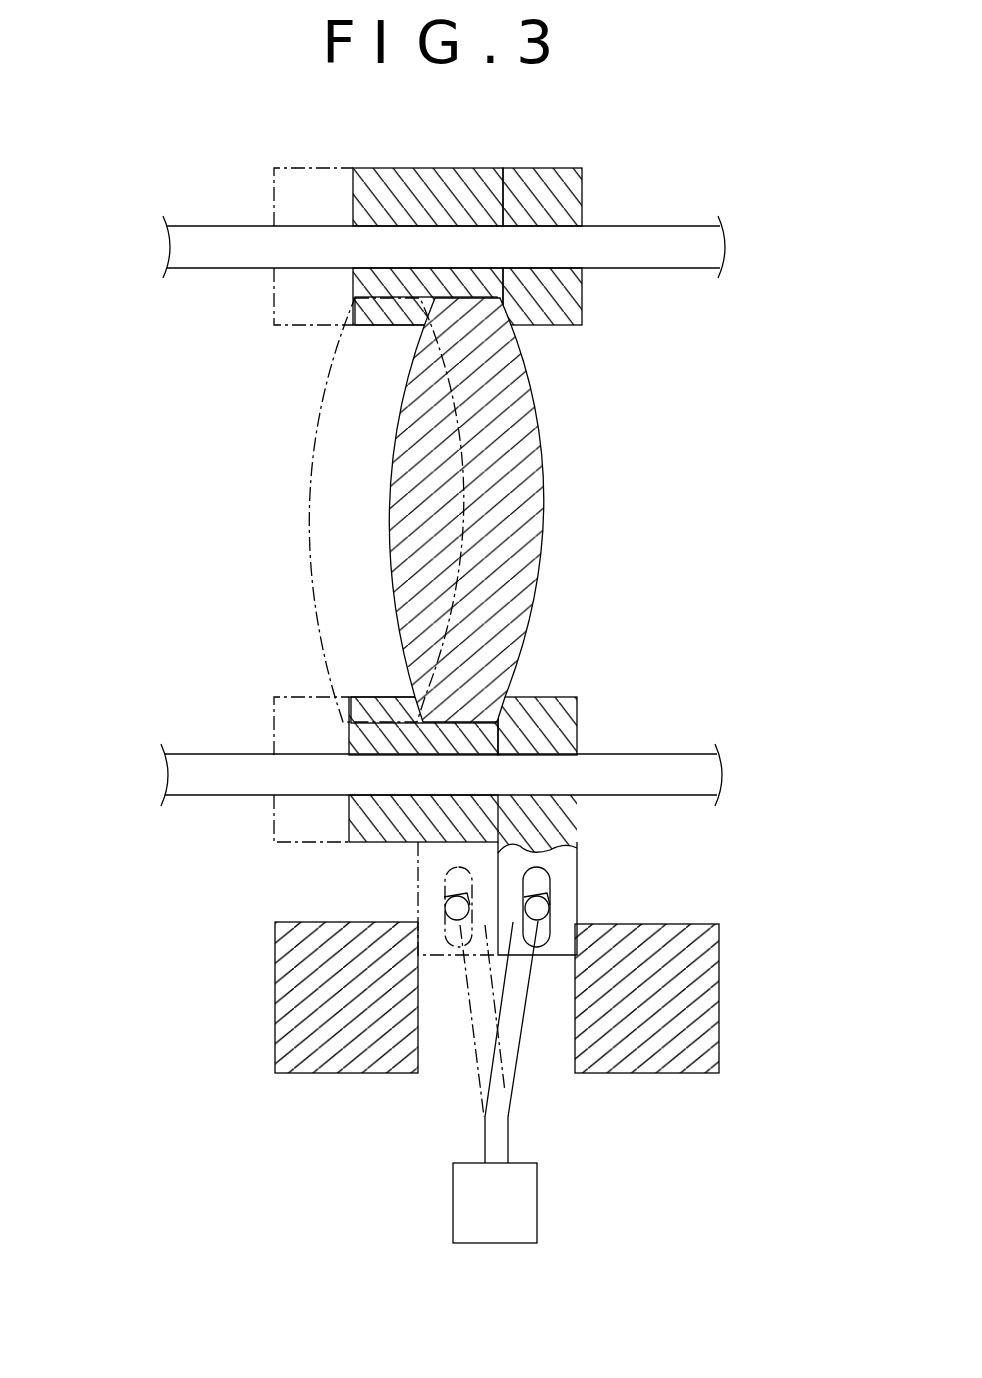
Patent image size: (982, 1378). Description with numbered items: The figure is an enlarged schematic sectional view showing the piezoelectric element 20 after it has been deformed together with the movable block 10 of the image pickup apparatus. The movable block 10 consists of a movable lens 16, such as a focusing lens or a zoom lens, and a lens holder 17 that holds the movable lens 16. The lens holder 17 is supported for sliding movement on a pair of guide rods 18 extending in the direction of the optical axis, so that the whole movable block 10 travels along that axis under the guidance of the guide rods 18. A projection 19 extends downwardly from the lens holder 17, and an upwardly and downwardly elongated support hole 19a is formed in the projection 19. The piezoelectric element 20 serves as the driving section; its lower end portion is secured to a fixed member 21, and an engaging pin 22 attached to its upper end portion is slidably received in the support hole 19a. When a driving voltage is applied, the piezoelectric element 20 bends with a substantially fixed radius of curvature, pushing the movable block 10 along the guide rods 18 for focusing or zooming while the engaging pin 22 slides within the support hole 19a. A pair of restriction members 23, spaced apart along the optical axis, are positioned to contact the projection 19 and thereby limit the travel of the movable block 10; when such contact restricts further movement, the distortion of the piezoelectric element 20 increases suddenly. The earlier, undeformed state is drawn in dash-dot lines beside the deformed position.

The movable block 10 is at (100, 412).
The movable lens 16 is at (311, 452).
The lens holder 17 is at (290, 697).
The guide rods 18 is at (664, 229).
The projection 19 is at (413, 865).
The support hole 19a is at (413, 883).
The piezoelectric element 20 is at (475, 1055).
The fixed member 21 is at (523, 1198).
The engaging pin 22 is at (443, 912).
The restriction members 23 is at (275, 1003).